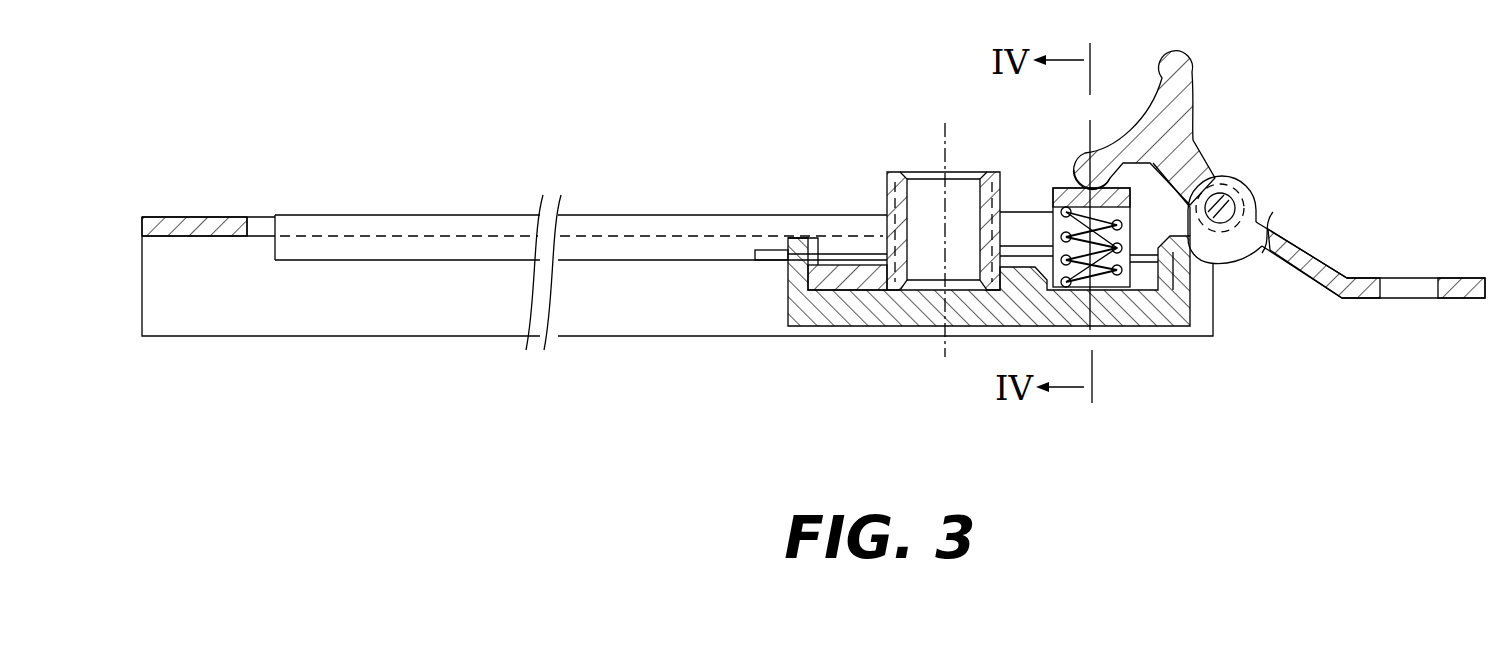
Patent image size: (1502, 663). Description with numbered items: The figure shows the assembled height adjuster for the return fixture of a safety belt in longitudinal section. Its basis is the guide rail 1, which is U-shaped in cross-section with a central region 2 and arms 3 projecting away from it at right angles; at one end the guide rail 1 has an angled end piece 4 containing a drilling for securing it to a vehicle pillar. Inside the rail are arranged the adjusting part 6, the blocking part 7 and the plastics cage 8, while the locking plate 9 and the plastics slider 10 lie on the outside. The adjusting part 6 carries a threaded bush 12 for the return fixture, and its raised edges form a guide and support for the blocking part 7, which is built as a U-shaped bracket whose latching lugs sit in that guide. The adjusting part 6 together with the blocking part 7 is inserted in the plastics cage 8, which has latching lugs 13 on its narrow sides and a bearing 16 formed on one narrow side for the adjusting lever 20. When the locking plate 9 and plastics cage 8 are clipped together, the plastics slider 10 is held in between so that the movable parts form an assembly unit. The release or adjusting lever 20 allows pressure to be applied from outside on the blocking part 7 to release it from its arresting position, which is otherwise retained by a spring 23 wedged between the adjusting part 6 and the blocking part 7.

The guide rail 1 is at (432, 211).
The central region 2 is at (385, 221).
The arms 3 is at (291, 321).
The angled end piece 4 is at (1464, 278).
The adjusting part 6 is at (861, 270).
The blocking part 7 is at (1066, 184).
The plastics cage 8 is at (903, 306).
The locking plate 9 is at (1027, 250).
The plastics slider 10 is at (1150, 264).
The threaded bush 12 is at (899, 172).
The latching lugs 13 is at (818, 237).
The bearing 16 is at (1226, 214).
The adjusting lever 20 is at (1178, 86).
The spring 23 is at (1128, 152).